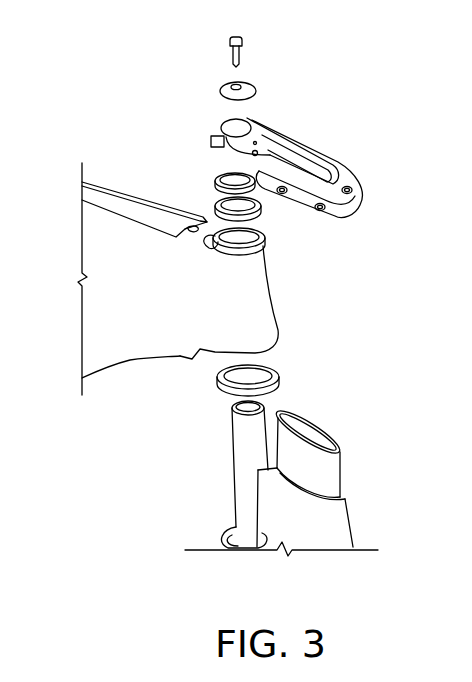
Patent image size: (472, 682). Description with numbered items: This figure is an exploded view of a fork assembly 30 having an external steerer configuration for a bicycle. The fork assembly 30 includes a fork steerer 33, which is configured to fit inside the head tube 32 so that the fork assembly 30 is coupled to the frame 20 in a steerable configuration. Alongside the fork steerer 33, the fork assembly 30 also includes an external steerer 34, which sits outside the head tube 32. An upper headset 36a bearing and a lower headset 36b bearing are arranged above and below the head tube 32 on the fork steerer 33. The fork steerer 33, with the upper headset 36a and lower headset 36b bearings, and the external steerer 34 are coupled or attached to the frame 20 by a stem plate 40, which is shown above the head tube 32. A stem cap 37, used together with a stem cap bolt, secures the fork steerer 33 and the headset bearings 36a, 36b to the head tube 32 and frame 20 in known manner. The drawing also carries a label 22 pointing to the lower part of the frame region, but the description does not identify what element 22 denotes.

The frame 20 is at (139, 187).
The fabric lower edge 22 is at (110, 380).
The fork assembly 30 is at (261, 480).
The head tube 32 is at (275, 310).
The fork steerer 33 is at (243, 47).
The external steerer 34 is at (350, 522).
The upper headset bearing 36a is at (263, 212).
The lower headset bearing 36b is at (219, 384).
The stem cap 37 is at (221, 90).
The stem plate 40 is at (308, 142).